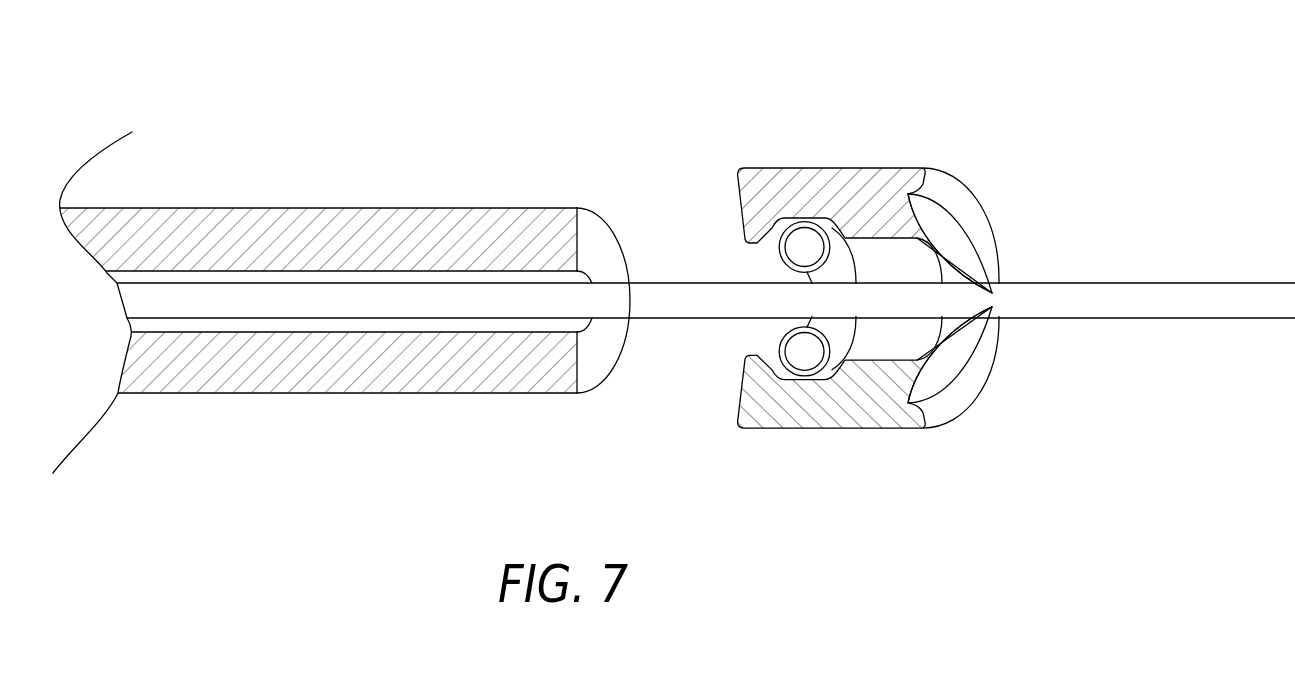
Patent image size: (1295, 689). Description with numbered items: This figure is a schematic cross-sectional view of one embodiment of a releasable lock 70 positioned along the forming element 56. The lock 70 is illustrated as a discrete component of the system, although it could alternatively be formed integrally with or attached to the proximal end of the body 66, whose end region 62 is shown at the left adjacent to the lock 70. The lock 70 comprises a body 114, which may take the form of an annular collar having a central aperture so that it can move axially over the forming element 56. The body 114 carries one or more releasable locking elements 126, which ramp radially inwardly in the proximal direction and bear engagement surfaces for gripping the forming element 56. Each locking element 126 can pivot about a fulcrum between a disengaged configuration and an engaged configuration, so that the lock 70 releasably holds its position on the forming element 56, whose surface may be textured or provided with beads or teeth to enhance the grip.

The forming element 56 is at (1209, 308).
The distal end of tubular body 62 is at (580, 323).
The body 66 is at (238, 220).
The releasable lock 70 is at (901, 148).
The body 114 is at (953, 398).
The releasable locking element 126 is at (955, 255).